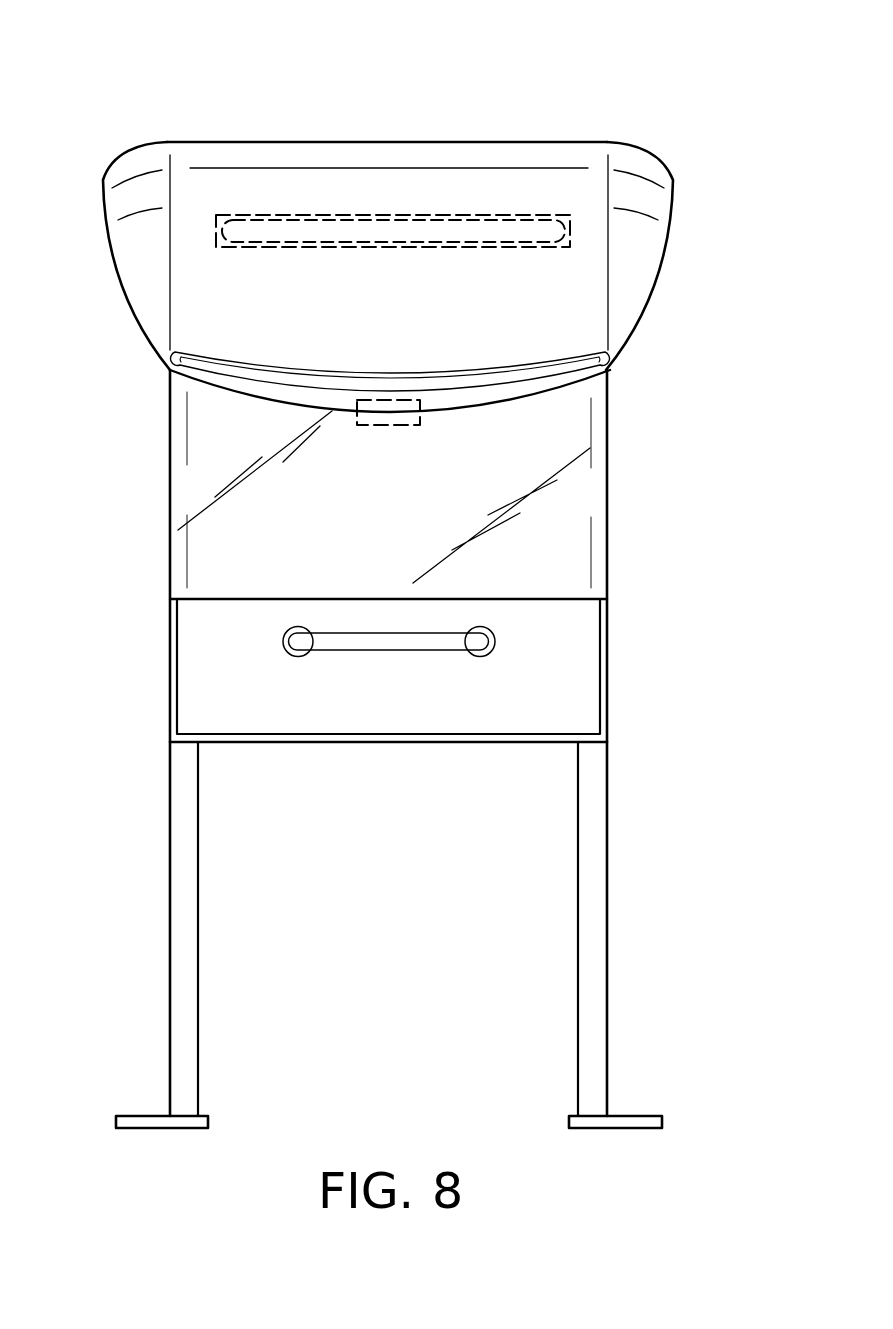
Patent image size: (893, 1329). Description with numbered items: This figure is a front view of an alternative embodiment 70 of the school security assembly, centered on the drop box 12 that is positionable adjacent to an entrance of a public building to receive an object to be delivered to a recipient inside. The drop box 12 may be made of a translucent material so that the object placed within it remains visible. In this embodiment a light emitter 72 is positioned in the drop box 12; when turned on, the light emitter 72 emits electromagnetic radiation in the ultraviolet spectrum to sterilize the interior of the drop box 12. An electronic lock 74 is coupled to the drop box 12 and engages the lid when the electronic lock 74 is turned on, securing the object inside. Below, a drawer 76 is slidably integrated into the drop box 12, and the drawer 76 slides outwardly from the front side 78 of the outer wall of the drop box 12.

The alternative embodiment 70 is at (132, 100).
The drop box 12 is at (168, 535).
The light emitter 72 is at (442, 215).
The electronic lock 74 is at (422, 414).
The drawer 76 is at (212, 640).
The front side 78 is at (568, 545).